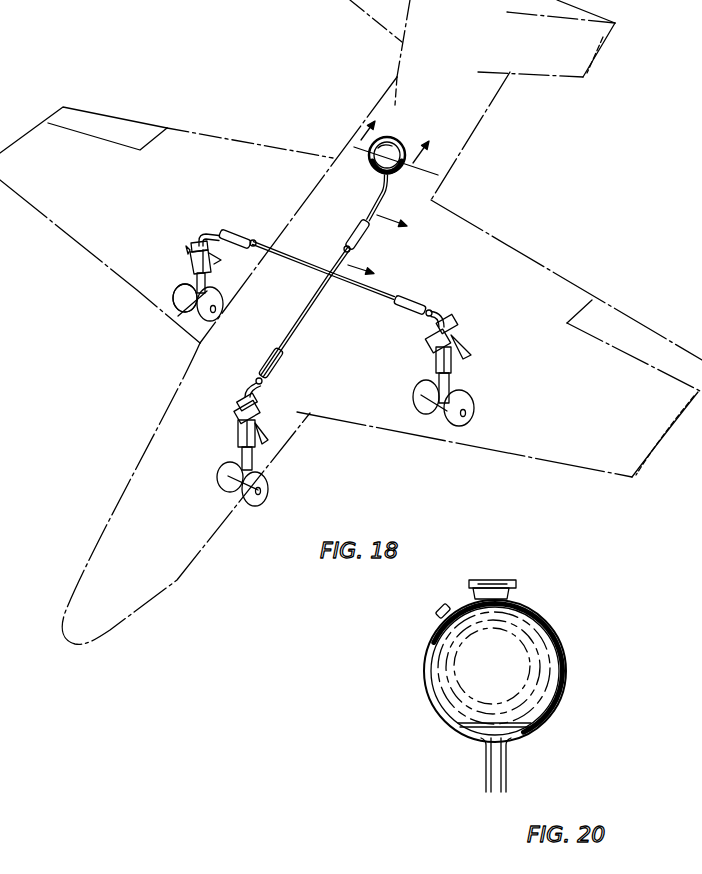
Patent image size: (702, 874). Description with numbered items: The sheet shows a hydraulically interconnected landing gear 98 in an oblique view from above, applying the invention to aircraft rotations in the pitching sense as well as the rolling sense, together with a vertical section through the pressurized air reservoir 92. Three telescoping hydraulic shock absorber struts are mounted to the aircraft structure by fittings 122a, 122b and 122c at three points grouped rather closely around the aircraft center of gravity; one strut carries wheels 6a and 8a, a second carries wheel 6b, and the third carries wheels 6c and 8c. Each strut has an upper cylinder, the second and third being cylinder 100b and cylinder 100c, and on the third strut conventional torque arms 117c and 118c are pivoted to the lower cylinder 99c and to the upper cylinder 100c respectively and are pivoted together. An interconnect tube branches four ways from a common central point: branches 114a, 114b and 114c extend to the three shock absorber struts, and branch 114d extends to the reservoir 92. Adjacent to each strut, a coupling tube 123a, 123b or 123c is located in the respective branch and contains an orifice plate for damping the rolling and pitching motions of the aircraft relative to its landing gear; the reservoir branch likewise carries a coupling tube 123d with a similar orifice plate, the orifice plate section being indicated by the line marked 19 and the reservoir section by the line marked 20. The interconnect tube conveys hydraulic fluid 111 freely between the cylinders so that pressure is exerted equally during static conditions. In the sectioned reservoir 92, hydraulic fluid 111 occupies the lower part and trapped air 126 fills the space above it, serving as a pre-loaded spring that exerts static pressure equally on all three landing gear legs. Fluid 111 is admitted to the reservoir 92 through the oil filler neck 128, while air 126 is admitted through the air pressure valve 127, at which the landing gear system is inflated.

In FIG. 18, the landing gear wheel 6a is at (176, 295).
In FIG. 18, the landing gear wheel 6b is at (466, 415).
In FIG. 18, the landing gear wheel 6c is at (262, 485).
In FIG. 18, the landing gear wheel 8a is at (176, 322).
In FIG. 18, the landing gear wheel 8c is at (230, 495).
In FIG. 18, the section line 19 is at (362, 237).
In FIG. 18, the section line 20 is at (386, 155).
In FIG. 18, the reservoir 92 is at (391, 141).
In FIG. 20, the reservoir 92 is at (548, 623).
In FIG. 18, the hydraulically interconnected landing gear 98 is at (199, 235).
In FIG. 18, the cylinder 99c is at (242, 457).
In FIG. 18, the cylinder 100b is at (444, 357).
In FIG. 18, the cylinder 100c is at (247, 435).
In FIG. 20, the hydraulic fluid 111 is at (538, 733).
In FIG. 18, the branch of interconnect tube 114a is at (306, 264).
In FIG. 18, the branch of interconnect tube 114b is at (377, 296).
In FIG. 18, the branch of interconnect tube 114c is at (298, 333).
In FIG. 18, the branch of interconnect tube 114d is at (385, 204).
In FIG. 20, the branch of interconnect tube 114d is at (506, 778).
In FIG. 18, the torque arm 117c is at (260, 463).
In FIG. 18, the torque arm 118c is at (270, 437).
In FIG. 18, the fitting 122a is at (187, 249).
In FIG. 18, the fitting 122b is at (457, 322).
In FIG. 18, the fitting 122c is at (236, 416).
In FIG. 18, the coupling tube 123a is at (247, 228).
In FIG. 18, the coupling tube 123b is at (417, 305).
In FIG. 18, the coupling tube 123c is at (277, 372).
In FIG. 18, the coupling tube 123d is at (368, 243).
In FIG. 20, the trapped air 126 is at (514, 666).
In FIG. 20, the air pressure valve 127 is at (433, 613).
In FIG. 20, the oil filler neck 128 is at (514, 578).